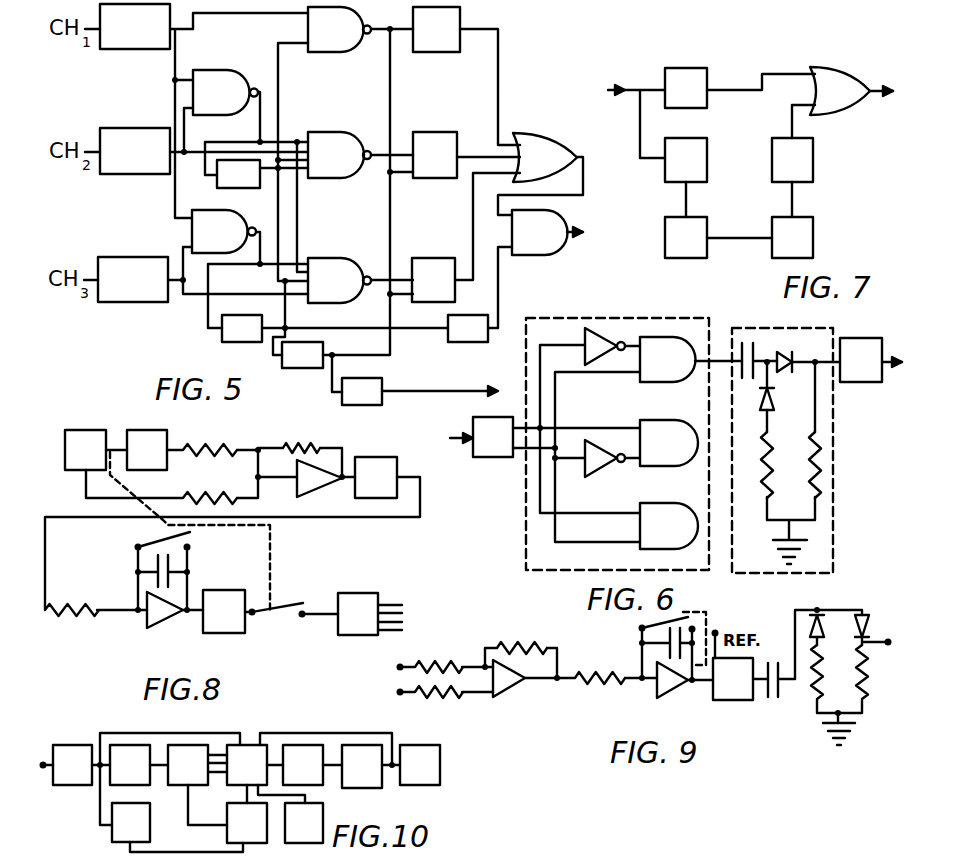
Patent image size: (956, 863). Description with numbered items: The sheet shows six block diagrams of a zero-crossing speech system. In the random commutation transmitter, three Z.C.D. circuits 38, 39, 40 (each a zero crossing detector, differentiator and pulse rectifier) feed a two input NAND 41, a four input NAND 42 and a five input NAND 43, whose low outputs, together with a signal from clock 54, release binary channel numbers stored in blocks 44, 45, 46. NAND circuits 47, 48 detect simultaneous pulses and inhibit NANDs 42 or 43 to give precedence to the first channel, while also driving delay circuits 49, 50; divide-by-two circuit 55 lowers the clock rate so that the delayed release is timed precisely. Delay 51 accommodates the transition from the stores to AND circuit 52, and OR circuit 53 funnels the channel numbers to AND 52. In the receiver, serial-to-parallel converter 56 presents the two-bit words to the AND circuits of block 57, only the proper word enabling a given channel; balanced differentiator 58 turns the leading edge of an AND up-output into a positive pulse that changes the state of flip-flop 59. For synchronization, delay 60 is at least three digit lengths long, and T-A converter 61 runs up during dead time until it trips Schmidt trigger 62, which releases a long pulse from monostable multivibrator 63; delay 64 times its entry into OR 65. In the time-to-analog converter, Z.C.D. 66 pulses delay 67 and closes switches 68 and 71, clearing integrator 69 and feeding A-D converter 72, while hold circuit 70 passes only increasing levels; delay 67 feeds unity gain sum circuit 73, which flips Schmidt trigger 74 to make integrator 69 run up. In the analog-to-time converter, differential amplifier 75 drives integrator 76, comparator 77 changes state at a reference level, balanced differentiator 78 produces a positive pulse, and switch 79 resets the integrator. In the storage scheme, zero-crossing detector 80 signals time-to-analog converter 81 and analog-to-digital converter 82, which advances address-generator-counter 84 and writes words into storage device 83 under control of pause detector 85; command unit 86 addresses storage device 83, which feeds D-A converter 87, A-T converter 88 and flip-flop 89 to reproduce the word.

In FIG. 5, the zero crossing detector circuit 38 is at (150, 50).
In FIG. 5, the zero crossing detector circuit 39 is at (155, 178).
In FIG. 5, the zero crossing detector circuit 40 is at (165, 303).
In FIG. 5, the two input NAND circuit 41 is at (339, 29).
In FIG. 5, the four input NAND circuit 42 is at (339, 155).
In FIG. 5, the five input NAND circuit 43 is at (339, 280).
In FIG. 5, the channel number store 44 is at (436, 29).
In FIG. 5, the channel number store 45 is at (435, 155).
In FIG. 5, the channel number store 46 is at (433, 280).
In FIG. 5, the NAND circuit 47 is at (225, 92).
In FIG. 5, the NAND circuit 48 is at (224, 231).
In FIG. 5, the delay circuit 49 is at (238, 174).
In FIG. 5, the delay circuit 50 is at (242, 328).
In FIG. 5, the delay 51 is at (468, 328).
In FIG. 5, the AND circuit 52 is at (547, 232).
In FIG. 5, the OR circuit 53 is at (545, 157).
In FIG. 5, the clock 54 is at (362, 391).
In FIG. 5, the divide-by-two circuit 55 is at (302, 355).
In FIG. 6, the serial-to-parallel converter 56 is at (493, 437).
In FIG. 6, the AND circuit block 57 is at (526, 545).
In FIG. 6, the balanced differentiator 58 is at (833, 507).
In FIG. 6, the flip-flop 59 is at (871, 360).
In FIG. 7, the delay 60 is at (686, 88).
In FIG. 7, the T-A converter 61 is at (686, 160).
In FIG. 7, the Schmidt trigger 62 is at (686, 237).
In FIG. 7, the monostable multivibrator 63 is at (792, 237).
In FIG. 7, the delay 64 is at (792, 160).
In FIG. 7, the OR circuit 65 is at (840, 91).
In FIG. 8, the zero crossing detector 66 is at (85, 450).
In FIG. 8, the delay 67 is at (147, 450).
In FIG. 8, the switch 68 is at (157, 540).
In FIG. 8, the integrator 69 is at (165, 628).
In FIG. 8, the hold circuit 70 is at (224, 611).
In FIG. 8, the switch 71 is at (275, 617).
In FIG. 8, the A-D converter 72 is at (370, 614).
In FIG. 8, the unity gain sum circuit 73 is at (332, 487).
In FIG. 8, the Schmidt trigger 74 is at (376, 477).
In FIG. 9, the differential amplifier 75 is at (515, 692).
In FIG. 9, the integrator 76 is at (678, 693).
In FIG. 9, the comparator 77 is at (733, 679).
In FIG. 9, the balanced differentiator 78 is at (810, 697).
In FIG. 9, the switch 79 is at (649, 648).
In FIG. 10, the zero-crossing detector 80 is at (72, 765).
In FIG. 10, the time-to-analog converter 81 is at (130, 765).
In FIG. 10, the analog-to-digital converter 82 is at (188, 765).
In FIG. 10, the storage device 83 is at (247, 765).
In FIG. 10, the address-generator-counter 84 is at (247, 823).
In FIG. 10, the pause detector 85 is at (131, 822).
In FIG. 10, the command unit 86 is at (304, 823).
In FIG. 10, the D-A converter 87 is at (303, 765).
In FIG. 10, the A-T converter 88 is at (362, 766).
In FIG. 10, the flip-flop 89 is at (420, 765).